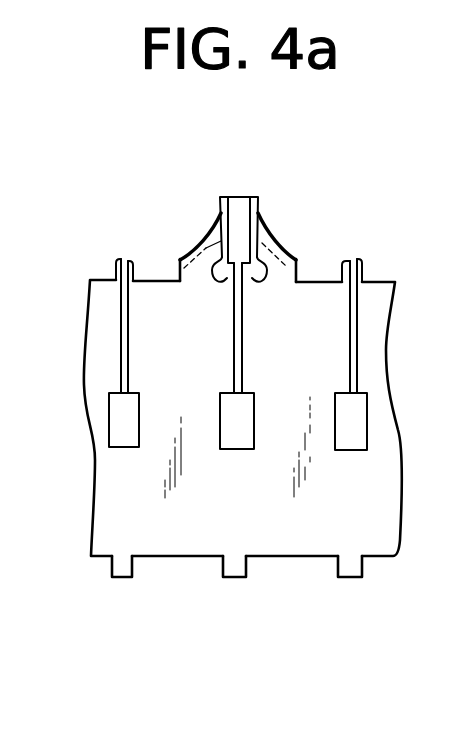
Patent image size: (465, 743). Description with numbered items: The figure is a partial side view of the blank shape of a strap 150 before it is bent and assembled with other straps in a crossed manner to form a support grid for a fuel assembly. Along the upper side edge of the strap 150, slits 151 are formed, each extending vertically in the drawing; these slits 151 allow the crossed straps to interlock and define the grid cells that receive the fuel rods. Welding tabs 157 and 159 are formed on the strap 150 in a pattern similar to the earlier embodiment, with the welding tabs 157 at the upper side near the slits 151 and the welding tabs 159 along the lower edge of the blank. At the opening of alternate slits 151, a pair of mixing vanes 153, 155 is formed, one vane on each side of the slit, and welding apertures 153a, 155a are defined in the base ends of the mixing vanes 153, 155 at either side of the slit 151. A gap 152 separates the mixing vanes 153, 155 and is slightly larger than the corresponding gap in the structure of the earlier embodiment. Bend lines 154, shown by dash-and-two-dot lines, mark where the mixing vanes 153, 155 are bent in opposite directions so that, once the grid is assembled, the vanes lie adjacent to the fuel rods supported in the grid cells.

The strap 150 is at (100, 368).
The slits 151 is at (121, 334).
The gap 152 is at (237, 197).
The mixing vane 153 is at (258, 210).
The welding aperture 153a is at (260, 284).
The bend lines 154 is at (211, 249).
The mixing vane 155 is at (221, 211).
The welding aperture 155a is at (221, 284).
The welding tabs 157 is at (118, 261).
The welding tabs 159 is at (110, 574).